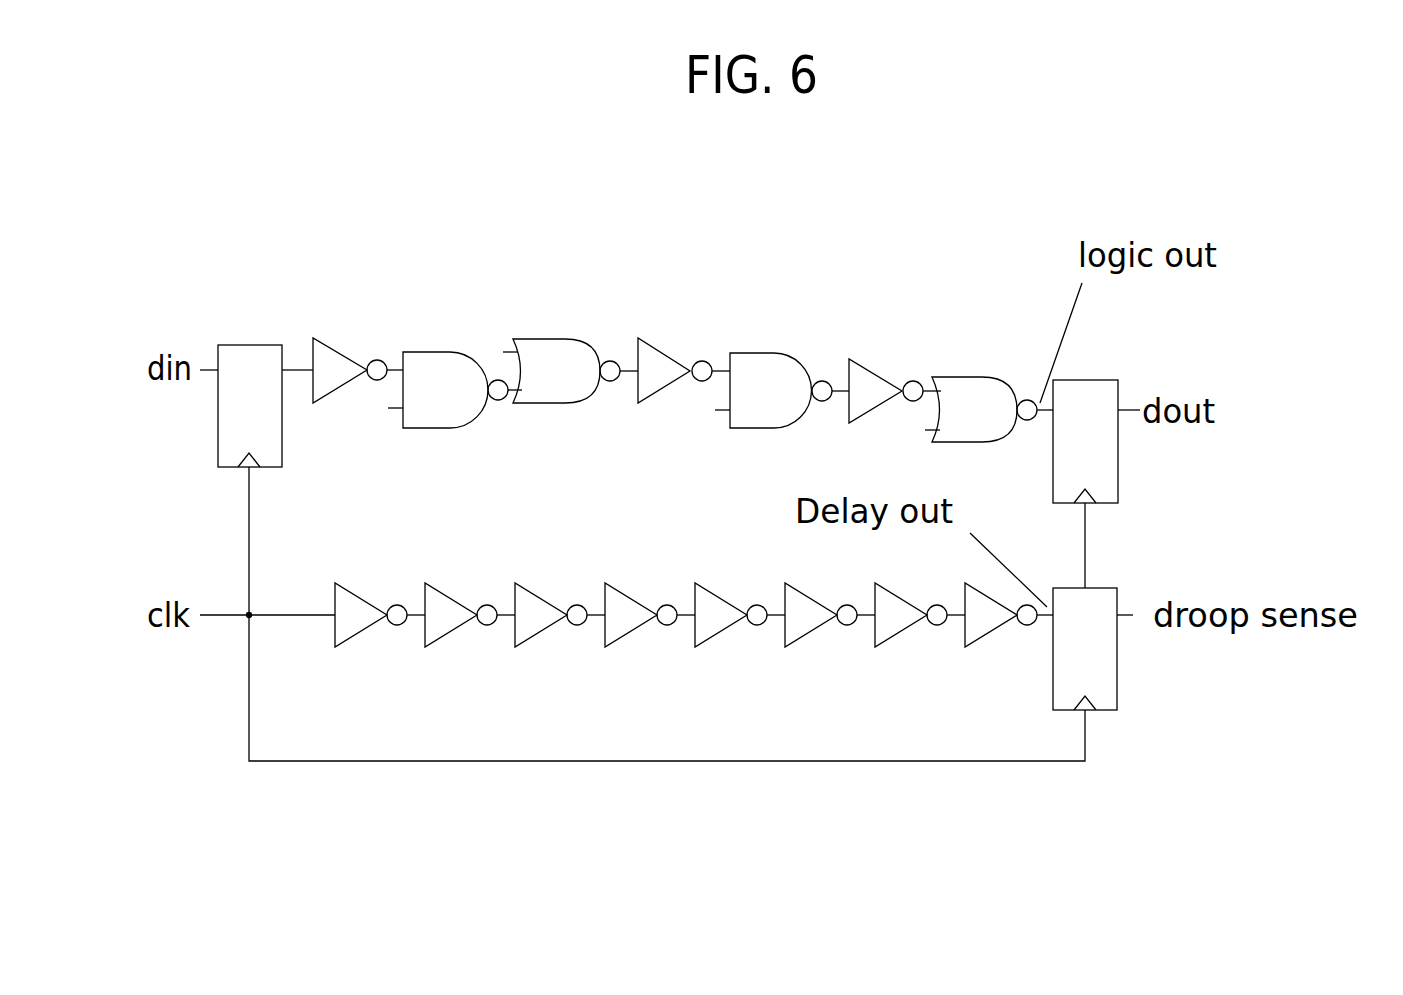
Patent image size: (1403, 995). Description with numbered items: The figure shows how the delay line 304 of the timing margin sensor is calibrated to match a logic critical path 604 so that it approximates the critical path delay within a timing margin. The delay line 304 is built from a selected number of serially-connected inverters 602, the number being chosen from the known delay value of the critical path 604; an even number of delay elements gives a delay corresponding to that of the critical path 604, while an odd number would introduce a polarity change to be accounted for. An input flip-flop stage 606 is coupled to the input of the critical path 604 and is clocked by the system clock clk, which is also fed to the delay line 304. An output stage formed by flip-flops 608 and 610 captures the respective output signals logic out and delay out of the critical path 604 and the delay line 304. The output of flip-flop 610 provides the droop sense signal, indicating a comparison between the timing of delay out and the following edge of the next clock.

The input flip-flop stage 606 is at (246, 343).
The logic critical path 604 is at (683, 358).
The output flip-flop 608 is at (1085, 380).
The serially-connected inverter 602 is at (357, 593).
The delay line 304 is at (694, 590).
The output flip-flop 610 is at (1107, 588).